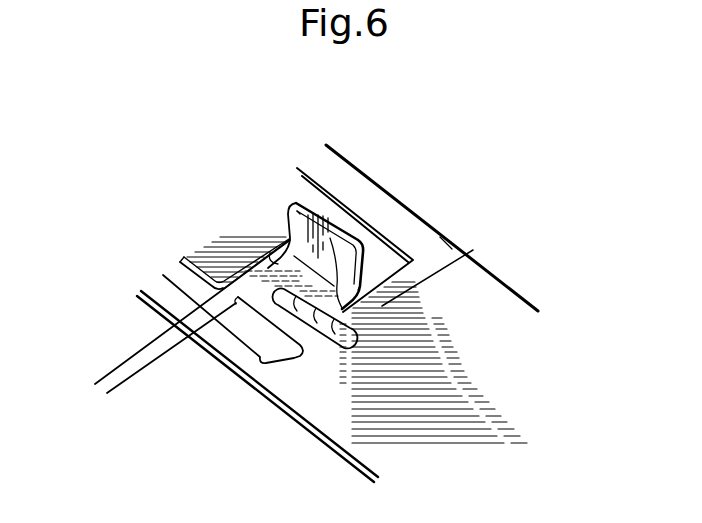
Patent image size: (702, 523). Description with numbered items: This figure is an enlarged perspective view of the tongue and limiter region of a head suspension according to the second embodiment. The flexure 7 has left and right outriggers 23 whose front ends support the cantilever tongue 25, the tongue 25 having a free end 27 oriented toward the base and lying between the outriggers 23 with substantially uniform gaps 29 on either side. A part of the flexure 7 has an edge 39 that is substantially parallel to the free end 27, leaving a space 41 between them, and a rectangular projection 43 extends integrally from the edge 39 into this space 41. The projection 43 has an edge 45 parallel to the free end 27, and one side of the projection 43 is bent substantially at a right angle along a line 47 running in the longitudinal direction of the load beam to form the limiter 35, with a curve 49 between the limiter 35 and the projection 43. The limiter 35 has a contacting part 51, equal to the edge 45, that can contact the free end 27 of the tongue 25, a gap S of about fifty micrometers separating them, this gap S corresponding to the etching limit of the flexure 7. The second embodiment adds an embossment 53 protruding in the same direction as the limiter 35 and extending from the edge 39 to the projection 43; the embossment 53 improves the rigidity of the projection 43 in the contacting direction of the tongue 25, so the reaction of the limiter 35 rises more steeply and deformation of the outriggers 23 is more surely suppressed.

The flexure 7 is at (478, 310).
The outriggers 23 is at (344, 177).
The tongue 25 is at (240, 250).
The free end 27 is at (253, 232).
The gaps 29 is at (298, 190).
The limiter 35 is at (332, 190).
The edge 39 is at (381, 290).
The space 41 is at (362, 284).
The projection 43 is at (267, 352).
The edge 45 is at (230, 258).
The line 47 is at (345, 233).
The curve 49 is at (452, 250).
The contacting part 51 is at (313, 188).
The embossment 53 is at (326, 344).
The gap S is at (157, 393).